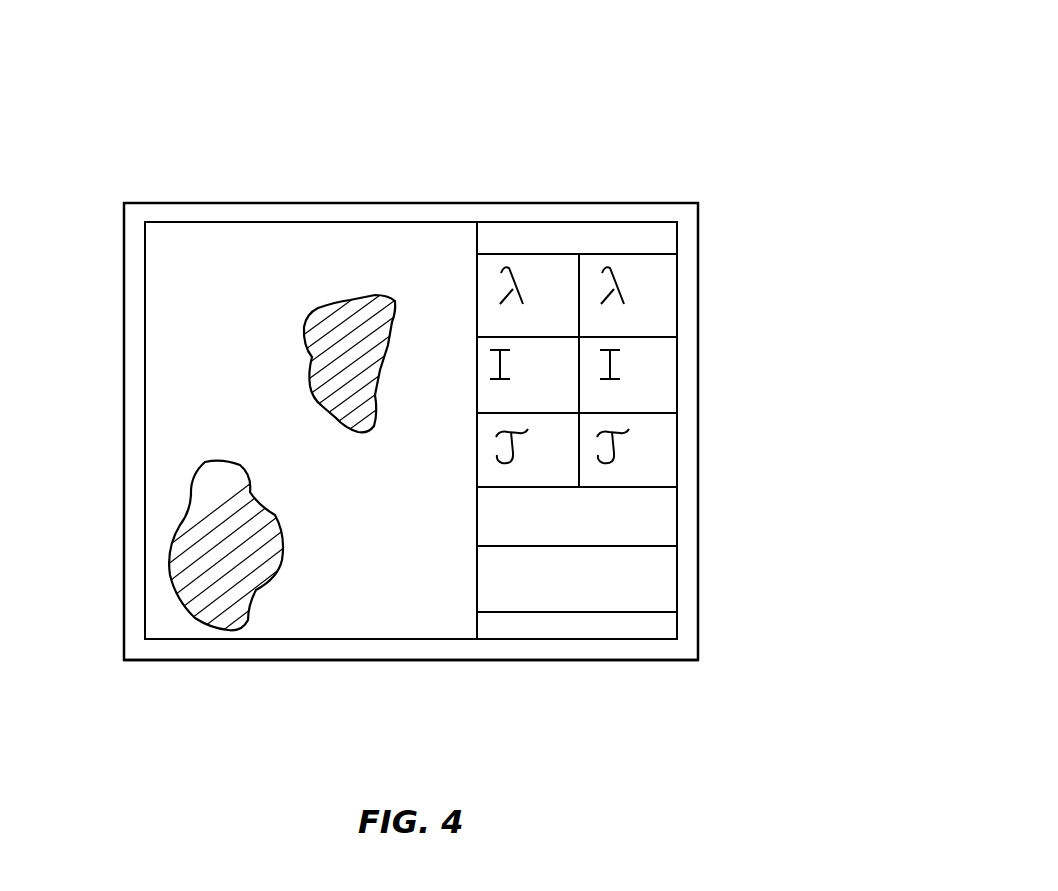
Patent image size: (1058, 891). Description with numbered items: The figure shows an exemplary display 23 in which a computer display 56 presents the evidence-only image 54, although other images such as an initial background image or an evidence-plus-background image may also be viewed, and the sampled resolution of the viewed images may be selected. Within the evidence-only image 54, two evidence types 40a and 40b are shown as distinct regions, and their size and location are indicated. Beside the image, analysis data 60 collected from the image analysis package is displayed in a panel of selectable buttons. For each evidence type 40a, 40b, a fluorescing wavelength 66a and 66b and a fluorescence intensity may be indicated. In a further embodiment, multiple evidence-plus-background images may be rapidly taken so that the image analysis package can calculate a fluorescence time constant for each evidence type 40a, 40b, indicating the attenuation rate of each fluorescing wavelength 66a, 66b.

The display 23 is at (585, 112).
The evidence-only image 54 is at (253, 263).
The computer display 56 is at (416, 660).
The evidence type 40a is at (170, 548).
The evidence type 40b is at (305, 330).
The analysis data 60 is at (652, 303).
The fluorescing wavelength 66a is at (573, 285).
The fluorescing wavelength 66b is at (669, 285).